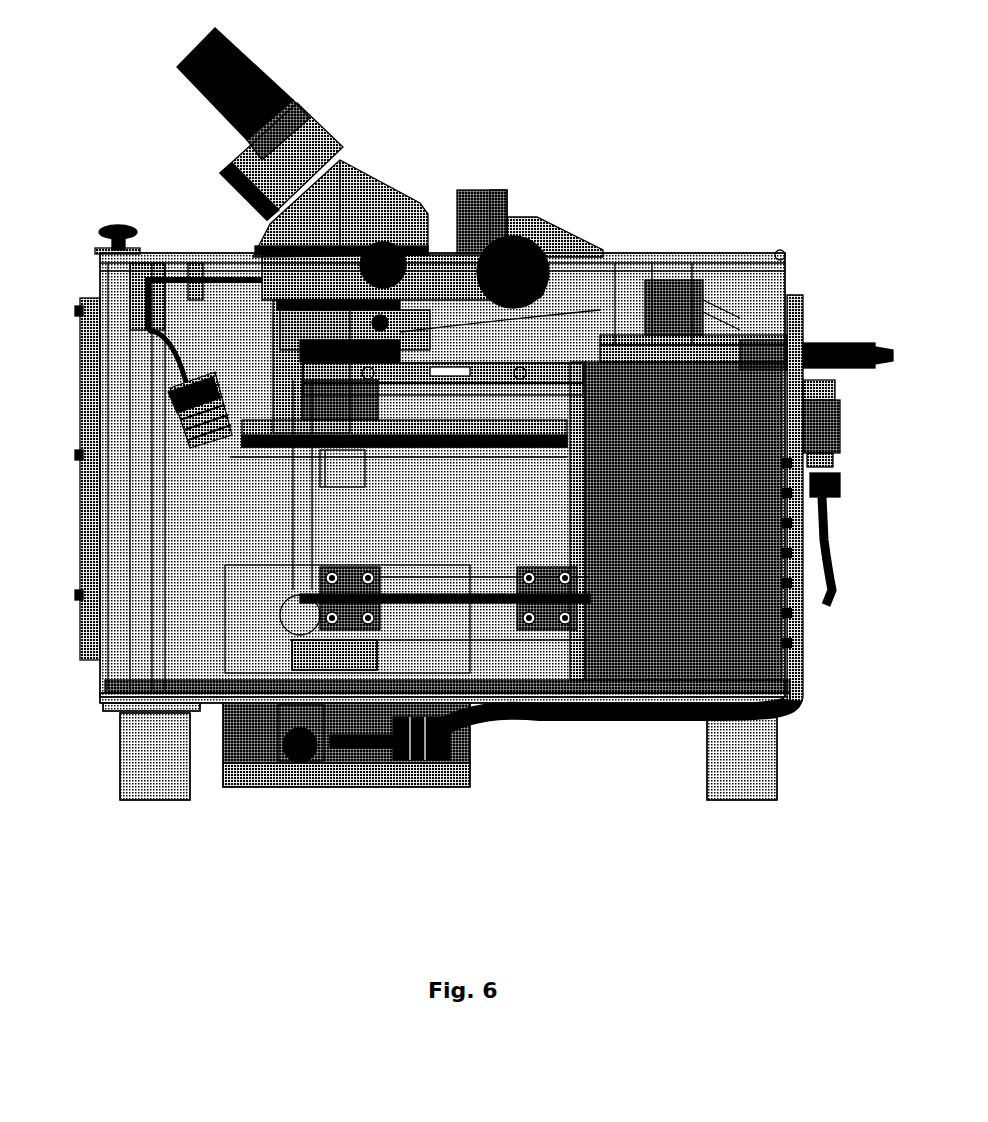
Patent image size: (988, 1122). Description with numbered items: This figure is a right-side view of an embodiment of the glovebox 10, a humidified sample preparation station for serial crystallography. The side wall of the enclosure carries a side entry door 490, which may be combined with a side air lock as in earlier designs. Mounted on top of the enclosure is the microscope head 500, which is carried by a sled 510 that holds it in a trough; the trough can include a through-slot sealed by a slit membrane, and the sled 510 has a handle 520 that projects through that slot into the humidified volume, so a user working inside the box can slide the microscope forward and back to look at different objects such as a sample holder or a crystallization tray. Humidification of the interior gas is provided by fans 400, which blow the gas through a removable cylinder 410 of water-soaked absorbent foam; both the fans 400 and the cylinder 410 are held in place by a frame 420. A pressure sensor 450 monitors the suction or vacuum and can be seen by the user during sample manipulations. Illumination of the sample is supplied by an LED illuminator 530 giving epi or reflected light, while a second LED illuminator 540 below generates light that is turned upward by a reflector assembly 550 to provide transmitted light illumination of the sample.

The glovebox 10 is at (112, 66).
The microscope head 500 is at (355, 232).
The side entry door 490 is at (490, 420).
The sled 510 is at (500, 383).
The fans 400 is at (672, 305).
The frame 420 is at (712, 333).
The pressure sensor 450 is at (822, 418).
The absorbent foam cylinder 410 is at (735, 540).
The LED illuminator 530 is at (197, 412).
The handle 520 is at (360, 483).
The reflector assembly 550 is at (332, 743).
The second LED illuminator 540 is at (413, 747).